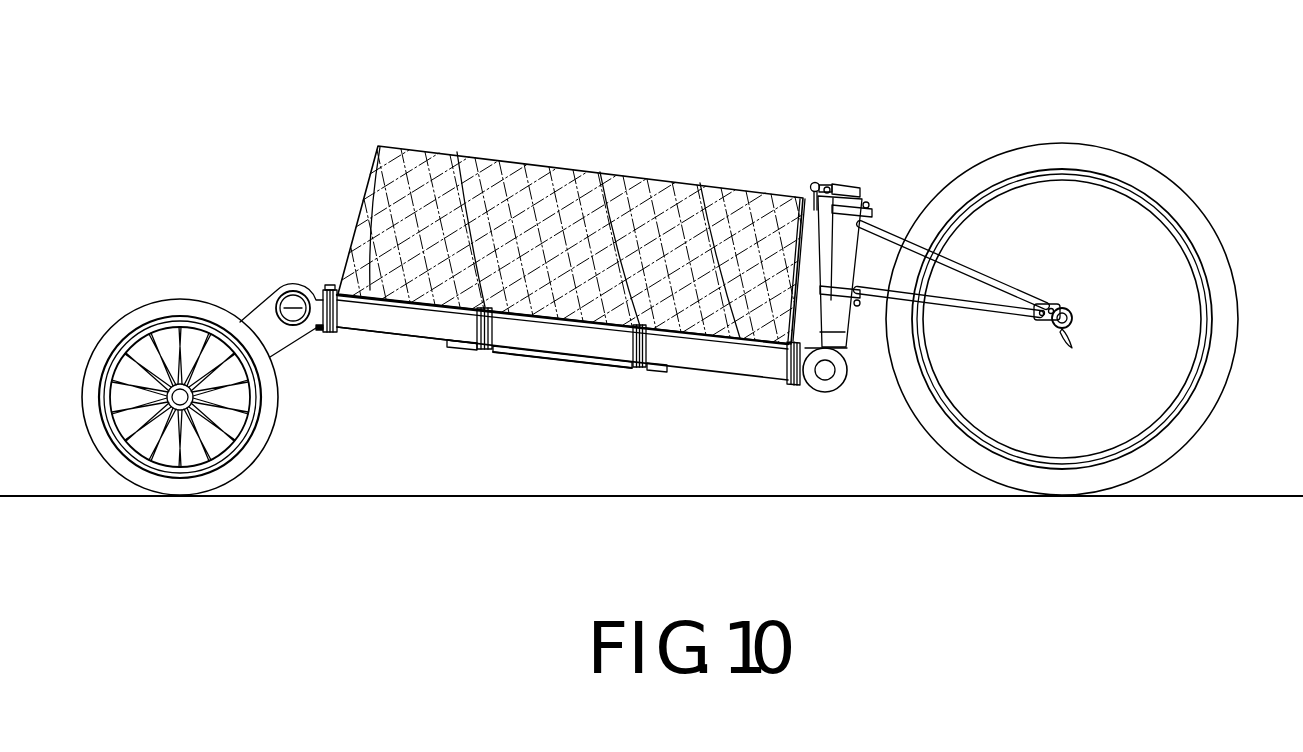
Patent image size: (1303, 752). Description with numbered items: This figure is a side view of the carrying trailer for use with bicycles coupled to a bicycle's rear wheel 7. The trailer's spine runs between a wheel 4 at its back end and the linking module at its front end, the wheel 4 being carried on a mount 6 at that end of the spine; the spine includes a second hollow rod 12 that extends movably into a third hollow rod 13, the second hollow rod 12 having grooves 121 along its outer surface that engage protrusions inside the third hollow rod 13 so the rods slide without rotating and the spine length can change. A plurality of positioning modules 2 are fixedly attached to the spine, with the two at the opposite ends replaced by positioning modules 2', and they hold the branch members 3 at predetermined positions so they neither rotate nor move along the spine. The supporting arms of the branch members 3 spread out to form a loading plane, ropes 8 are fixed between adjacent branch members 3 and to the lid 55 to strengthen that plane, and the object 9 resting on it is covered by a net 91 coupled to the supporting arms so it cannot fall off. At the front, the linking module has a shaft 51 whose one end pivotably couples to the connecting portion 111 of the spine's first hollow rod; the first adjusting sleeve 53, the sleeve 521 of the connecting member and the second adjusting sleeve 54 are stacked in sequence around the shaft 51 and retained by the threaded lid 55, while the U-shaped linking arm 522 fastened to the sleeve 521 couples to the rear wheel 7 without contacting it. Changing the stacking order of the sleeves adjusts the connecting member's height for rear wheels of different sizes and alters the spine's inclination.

The positioning module 2 is at (562, 366).
The positioning module 2' is at (558, 380).
The branch member 3 is at (484, 300).
The wheel 4 is at (113, 332).
The wheel fork 6 is at (260, 300).
The rear wheel 7 is at (1197, 210).
The rope 8 is at (838, 253).
The object 9 is at (386, 140).
The net 91 is at (365, 173).
The second hollow rod 12 is at (523, 352).
The groove 121 is at (558, 356).
The third hollow rod 13 is at (398, 322).
The shaft 51 is at (856, 350).
The sleeve 521 is at (790, 197).
The linking arm 522 is at (888, 285).
The first adjusting sleeve 53 is at (858, 306).
The second adjusting sleeve 54 is at (853, 190).
The lid 55 is at (847, 183).
The connecting portion 111 is at (820, 390).